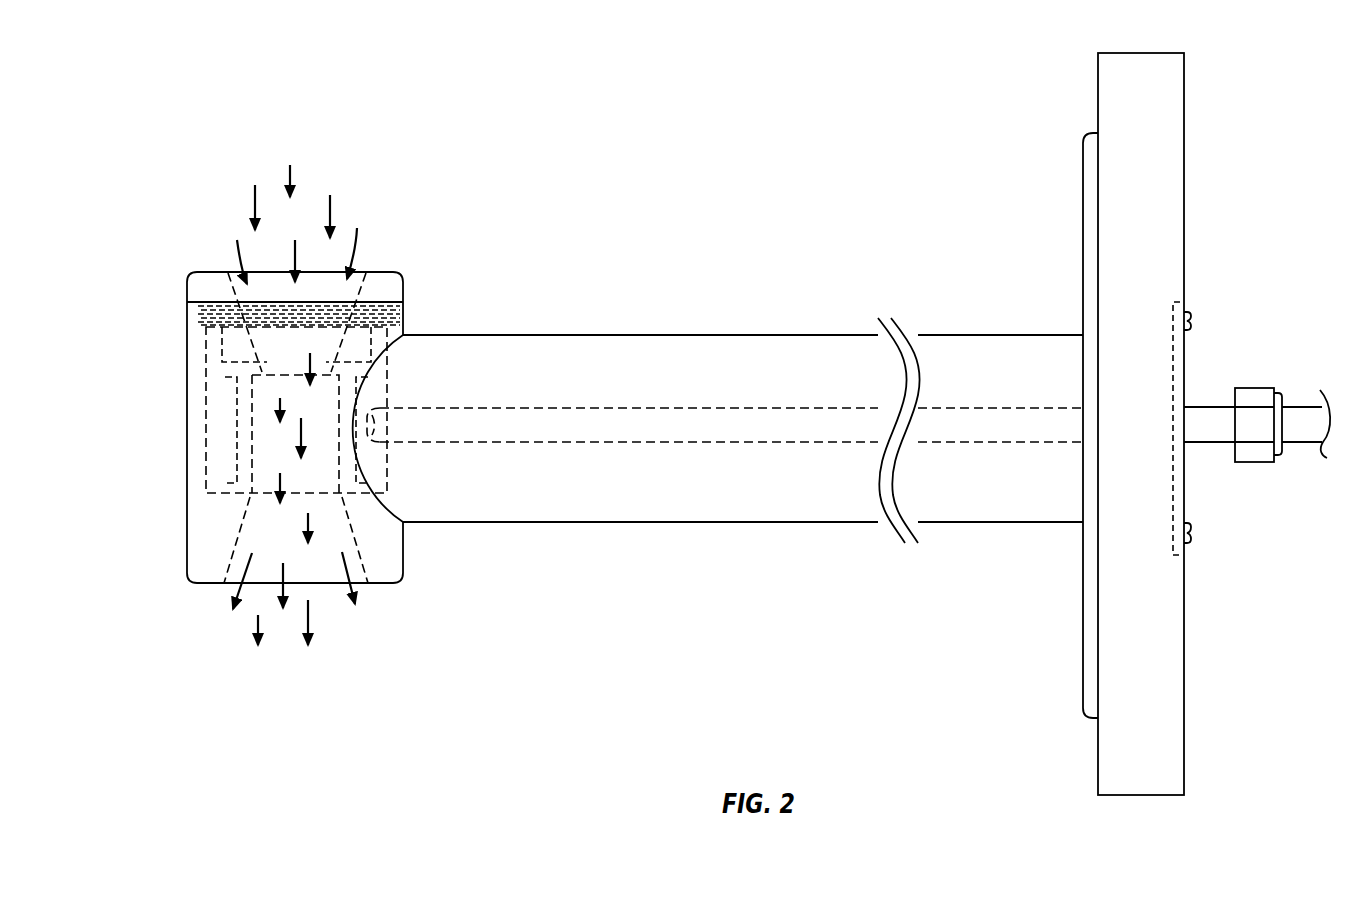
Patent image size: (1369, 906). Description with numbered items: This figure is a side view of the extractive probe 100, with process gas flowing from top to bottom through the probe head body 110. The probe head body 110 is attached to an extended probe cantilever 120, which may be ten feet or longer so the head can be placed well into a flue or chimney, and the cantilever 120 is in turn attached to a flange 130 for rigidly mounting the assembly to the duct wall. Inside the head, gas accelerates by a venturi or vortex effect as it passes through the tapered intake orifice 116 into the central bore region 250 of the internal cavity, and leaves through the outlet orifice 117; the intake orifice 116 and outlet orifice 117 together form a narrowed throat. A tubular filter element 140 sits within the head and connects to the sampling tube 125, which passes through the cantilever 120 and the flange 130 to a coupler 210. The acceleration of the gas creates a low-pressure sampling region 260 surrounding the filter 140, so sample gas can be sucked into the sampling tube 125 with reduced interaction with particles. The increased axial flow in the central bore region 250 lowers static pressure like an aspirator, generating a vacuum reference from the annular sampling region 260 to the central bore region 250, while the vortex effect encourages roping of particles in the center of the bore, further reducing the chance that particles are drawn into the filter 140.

The extractive probe 100 is at (615, 142).
The probe head body 110 is at (187, 563).
The intake orifice 116 is at (353, 288).
The outlet orifice 117 is at (347, 553).
The probe cantilever 120 is at (677, 522).
The sampling tube 125 is at (548, 408).
The flange 130 is at (1098, 102).
The tubular filter element 140 is at (247, 453).
The coupler 210 is at (1250, 388).
The central bore region 250 is at (267, 408).
The low-pressure sampling region 260 is at (220, 438).